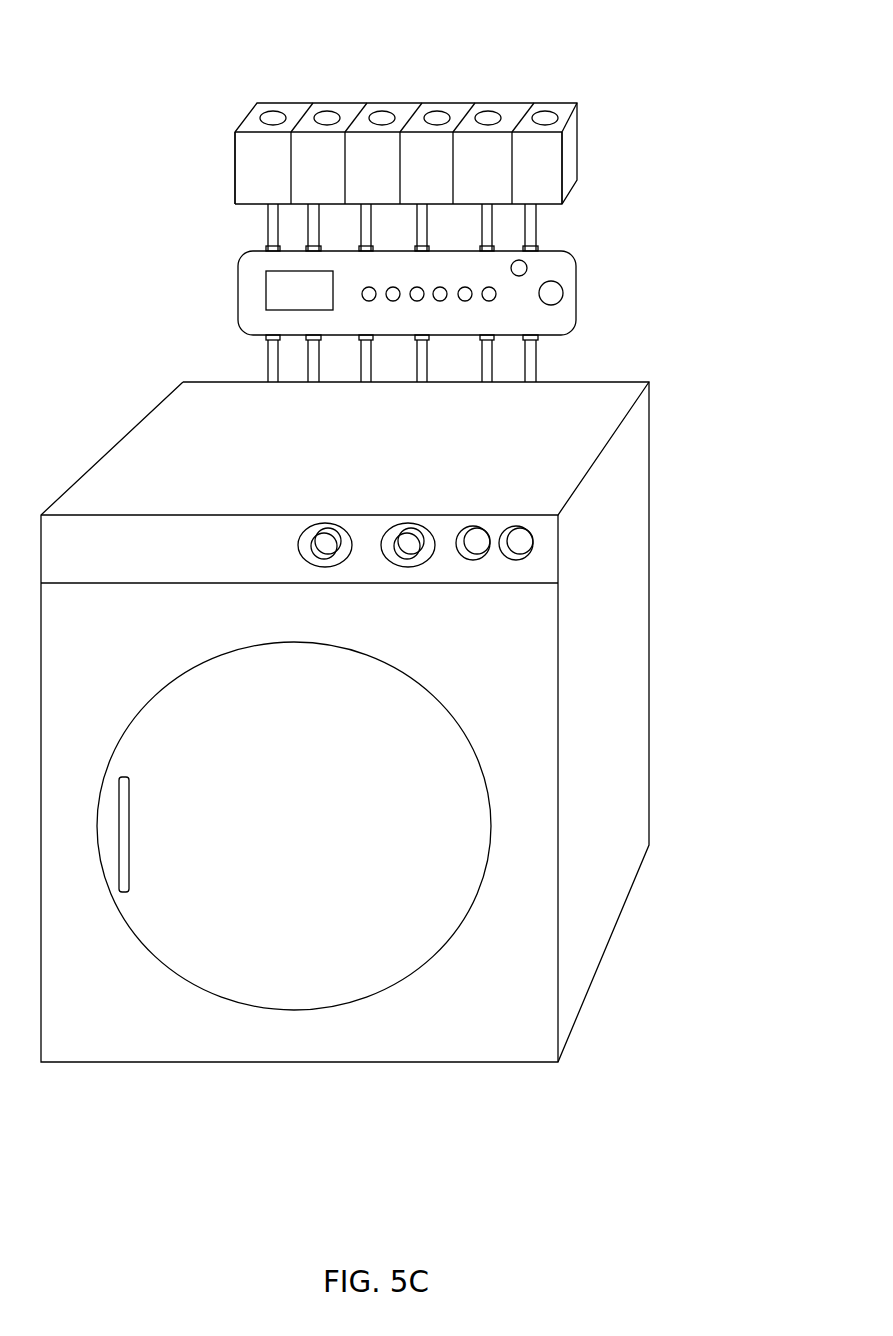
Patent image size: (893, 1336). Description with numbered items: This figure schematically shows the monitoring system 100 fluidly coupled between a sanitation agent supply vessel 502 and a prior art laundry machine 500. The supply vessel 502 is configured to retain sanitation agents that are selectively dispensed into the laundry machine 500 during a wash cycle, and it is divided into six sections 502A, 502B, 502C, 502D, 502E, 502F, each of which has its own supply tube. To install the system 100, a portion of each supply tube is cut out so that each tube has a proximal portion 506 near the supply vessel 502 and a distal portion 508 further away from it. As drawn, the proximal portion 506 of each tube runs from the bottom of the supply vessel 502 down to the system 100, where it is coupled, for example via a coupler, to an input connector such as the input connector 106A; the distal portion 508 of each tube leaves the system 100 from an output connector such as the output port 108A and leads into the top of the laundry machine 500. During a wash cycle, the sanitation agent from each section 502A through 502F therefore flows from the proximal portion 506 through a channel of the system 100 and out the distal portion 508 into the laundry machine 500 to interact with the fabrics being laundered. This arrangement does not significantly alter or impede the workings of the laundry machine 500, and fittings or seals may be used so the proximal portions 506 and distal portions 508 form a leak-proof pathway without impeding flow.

The laundry machine 500 is at (676, 495).
The system 100 is at (427, 293).
The input connector 106A is at (256, 249).
The output port 108A is at (253, 344).
The proximal portion 506 is at (272, 213).
The distal portion 508 is at (273, 372).
The sanitation agent supply vessel 502 is at (443, 107).
The supply vessel section 502A is at (272, 103).
The supply vessel section 502B is at (337, 103).
The supply vessel section 502C is at (400, 103).
The supply vessel section 502D is at (438, 103).
The supply vessel section 502E is at (502, 103).
The supply vessel section 502F is at (568, 103).